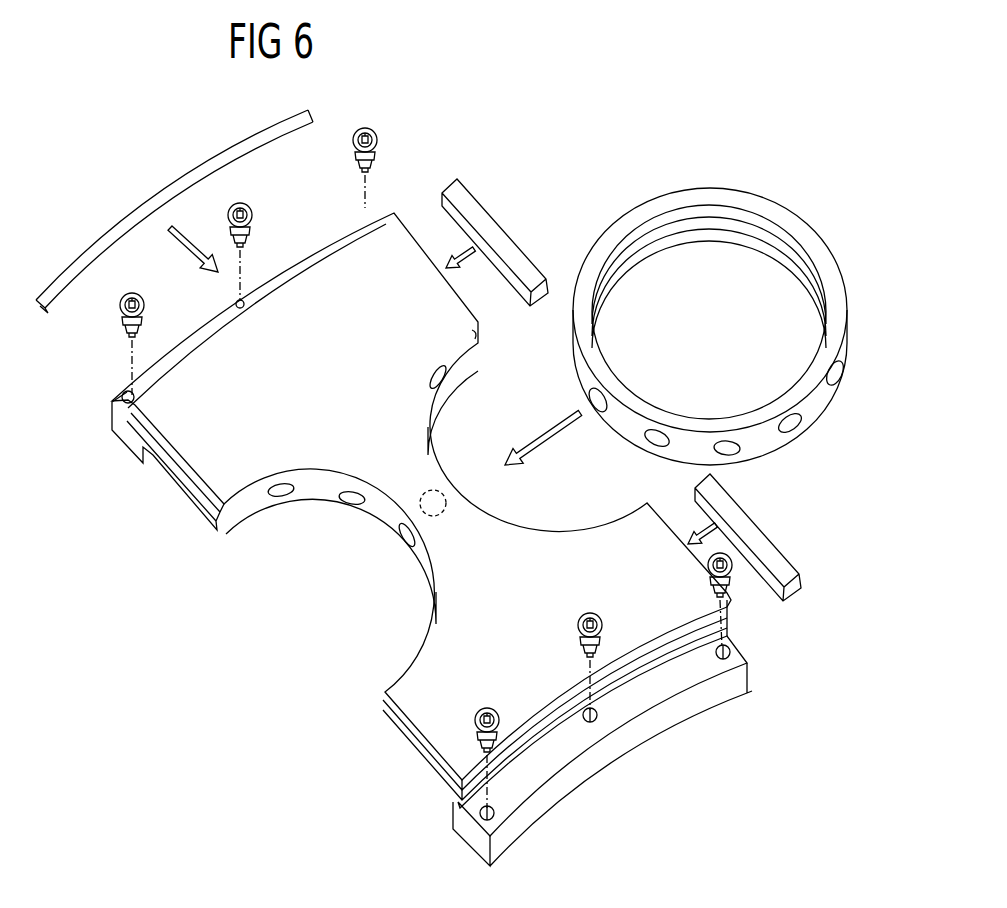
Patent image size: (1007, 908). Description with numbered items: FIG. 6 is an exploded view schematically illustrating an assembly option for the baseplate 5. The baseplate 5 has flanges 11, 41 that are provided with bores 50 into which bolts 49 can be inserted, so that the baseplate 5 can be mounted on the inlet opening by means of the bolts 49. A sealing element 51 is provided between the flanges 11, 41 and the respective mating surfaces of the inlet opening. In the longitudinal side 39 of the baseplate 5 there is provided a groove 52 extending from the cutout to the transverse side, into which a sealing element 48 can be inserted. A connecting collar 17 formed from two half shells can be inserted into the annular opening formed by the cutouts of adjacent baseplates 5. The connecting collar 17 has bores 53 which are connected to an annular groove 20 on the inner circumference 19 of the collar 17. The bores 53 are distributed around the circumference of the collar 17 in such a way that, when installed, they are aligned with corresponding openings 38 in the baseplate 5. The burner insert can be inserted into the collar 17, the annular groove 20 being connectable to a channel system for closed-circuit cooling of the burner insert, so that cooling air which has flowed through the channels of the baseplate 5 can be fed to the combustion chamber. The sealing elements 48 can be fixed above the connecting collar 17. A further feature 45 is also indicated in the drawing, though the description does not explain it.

The baseplate 5 is at (392, 236).
The flange 11 is at (328, 235).
The connecting collar 17 is at (812, 412).
The inner circumference 19 is at (745, 240).
The annular groove 20 is at (645, 243).
The openings 38 is at (400, 535).
The longitudinal side 39 is at (412, 760).
The flange 41 is at (548, 755).
The hole 45 is at (425, 490).
The sealing elements 48 is at (484, 212).
The bolts 49 is at (252, 207).
The bores 50 is at (125, 394).
The sealing element 51 is at (177, 197).
The grooves 52 is at (178, 478).
The bores 53 is at (725, 448).